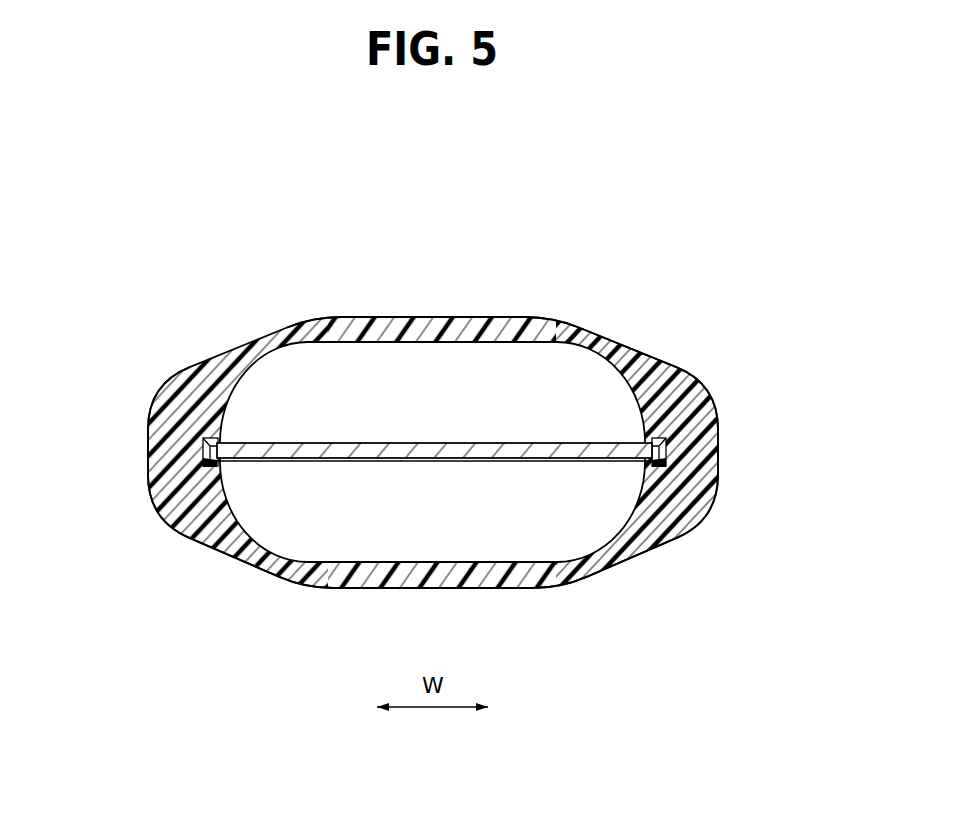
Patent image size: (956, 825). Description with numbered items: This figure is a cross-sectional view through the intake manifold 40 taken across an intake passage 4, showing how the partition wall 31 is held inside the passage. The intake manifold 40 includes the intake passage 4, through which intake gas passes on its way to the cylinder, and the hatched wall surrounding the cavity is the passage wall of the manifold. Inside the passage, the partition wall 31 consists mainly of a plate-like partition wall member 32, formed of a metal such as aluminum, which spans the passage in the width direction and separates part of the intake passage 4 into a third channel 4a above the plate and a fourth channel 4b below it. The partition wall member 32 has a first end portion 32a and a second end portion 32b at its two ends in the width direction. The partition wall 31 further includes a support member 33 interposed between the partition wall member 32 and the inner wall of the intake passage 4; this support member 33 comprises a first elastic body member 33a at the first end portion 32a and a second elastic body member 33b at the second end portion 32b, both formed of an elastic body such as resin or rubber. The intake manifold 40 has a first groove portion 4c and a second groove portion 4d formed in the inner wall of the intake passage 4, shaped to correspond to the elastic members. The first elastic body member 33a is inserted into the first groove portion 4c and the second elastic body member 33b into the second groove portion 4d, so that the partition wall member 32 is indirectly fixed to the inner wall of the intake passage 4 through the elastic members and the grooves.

The intake passage 4 is at (455, 337).
The third channel 4a is at (502, 360).
The fourth channel 4b is at (553, 537).
The first groove portion 4c is at (210, 440).
The second groove portion 4d is at (660, 438).
The partition wall 31 is at (312, 443).
The partition wall member 32 is at (363, 452).
The first end portion 32a is at (205, 450).
The second end portion 32b is at (665, 450).
The support member 33 is at (647, 467).
The first elastic body member 33a is at (213, 470).
The second elastic body member 33b is at (660, 468).
The intake manifold 40 is at (640, 358).